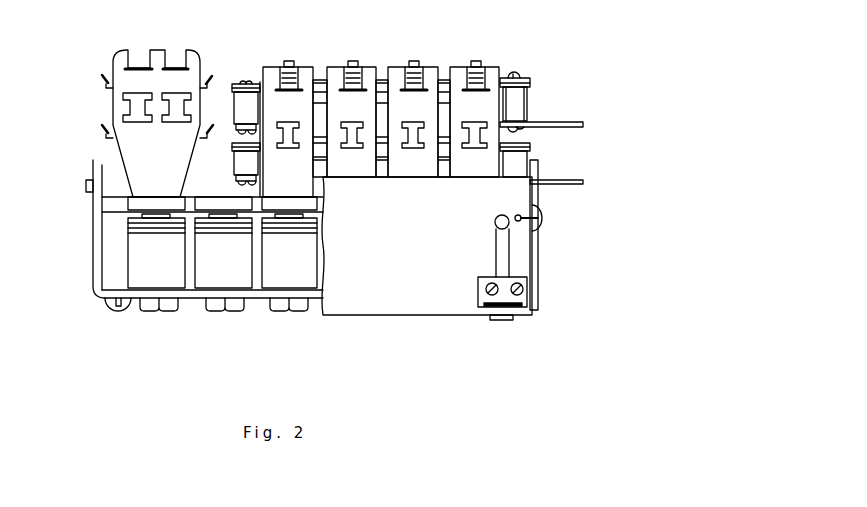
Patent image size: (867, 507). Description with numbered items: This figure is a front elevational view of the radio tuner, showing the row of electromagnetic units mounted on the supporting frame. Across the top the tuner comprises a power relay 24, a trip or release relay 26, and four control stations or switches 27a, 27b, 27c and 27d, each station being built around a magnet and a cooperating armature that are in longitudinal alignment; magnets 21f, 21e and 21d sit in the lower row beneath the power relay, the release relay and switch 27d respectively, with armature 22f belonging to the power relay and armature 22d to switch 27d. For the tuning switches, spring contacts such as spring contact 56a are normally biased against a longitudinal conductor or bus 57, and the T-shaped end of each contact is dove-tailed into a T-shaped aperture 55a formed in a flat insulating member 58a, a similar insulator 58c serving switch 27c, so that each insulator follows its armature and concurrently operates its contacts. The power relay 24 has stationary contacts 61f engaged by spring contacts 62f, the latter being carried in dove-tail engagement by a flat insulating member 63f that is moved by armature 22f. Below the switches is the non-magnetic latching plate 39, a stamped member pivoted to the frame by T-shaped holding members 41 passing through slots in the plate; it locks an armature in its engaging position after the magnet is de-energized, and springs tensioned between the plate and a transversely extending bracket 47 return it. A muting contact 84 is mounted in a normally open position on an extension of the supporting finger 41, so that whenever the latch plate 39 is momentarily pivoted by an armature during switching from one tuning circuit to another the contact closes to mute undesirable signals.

The magnet 21d is at (289, 251).
The magnet 21e is at (223, 251).
The magnet 21f is at (156, 251).
The armature 22d is at (280, 203).
The armature 22f is at (150, 197).
The power relay 24 is at (141, 109).
The trip or release relay 26 is at (205, 195).
The control station or switch 27a is at (515, 99).
The control station or switch 27b is at (398, 67).
The control station or switch 27c is at (336, 67).
The control station or switch 27d is at (265, 67).
The latching plate 39 is at (374, 312).
The T-shaped holding member 41 is at (530, 302).
The bracket 47 is at (95, 250).
The T-shaped aperture 55a is at (469, 124).
The spring contact 56a is at (488, 90).
The longitudinal conductor or bus 57 is at (518, 107).
The flat insulating member 58a is at (498, 68).
The flat insulating member 58c is at (346, 105).
The stationary contact 61f is at (208, 80).
The spring contact 62f is at (137, 62).
The flat insulating member 63f is at (110, 96).
The muting contact 84 is at (497, 226).